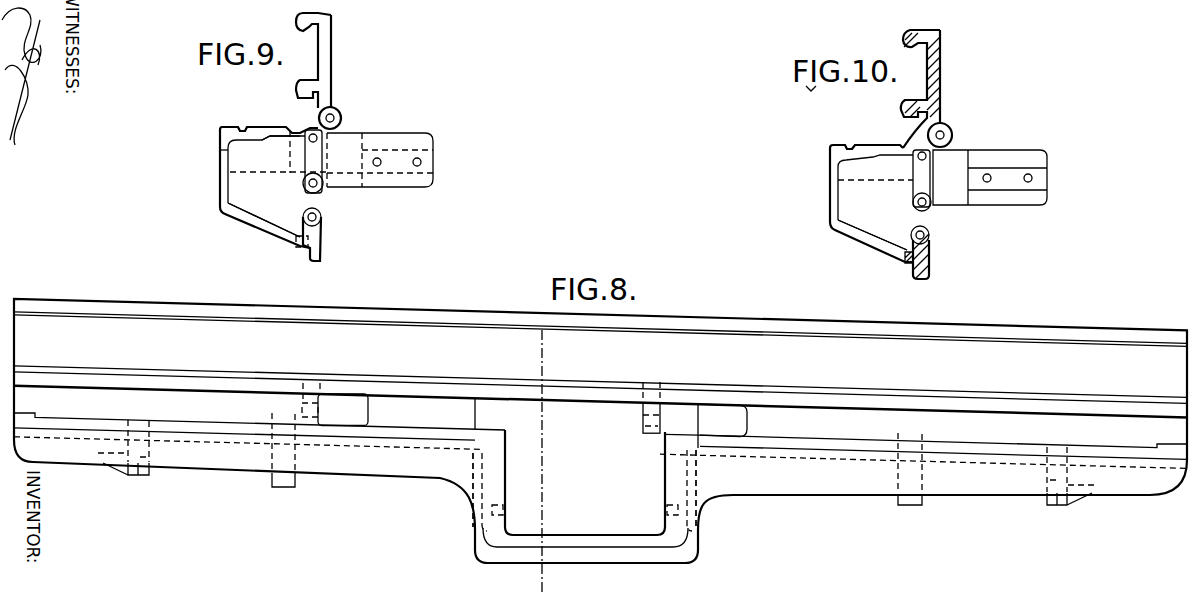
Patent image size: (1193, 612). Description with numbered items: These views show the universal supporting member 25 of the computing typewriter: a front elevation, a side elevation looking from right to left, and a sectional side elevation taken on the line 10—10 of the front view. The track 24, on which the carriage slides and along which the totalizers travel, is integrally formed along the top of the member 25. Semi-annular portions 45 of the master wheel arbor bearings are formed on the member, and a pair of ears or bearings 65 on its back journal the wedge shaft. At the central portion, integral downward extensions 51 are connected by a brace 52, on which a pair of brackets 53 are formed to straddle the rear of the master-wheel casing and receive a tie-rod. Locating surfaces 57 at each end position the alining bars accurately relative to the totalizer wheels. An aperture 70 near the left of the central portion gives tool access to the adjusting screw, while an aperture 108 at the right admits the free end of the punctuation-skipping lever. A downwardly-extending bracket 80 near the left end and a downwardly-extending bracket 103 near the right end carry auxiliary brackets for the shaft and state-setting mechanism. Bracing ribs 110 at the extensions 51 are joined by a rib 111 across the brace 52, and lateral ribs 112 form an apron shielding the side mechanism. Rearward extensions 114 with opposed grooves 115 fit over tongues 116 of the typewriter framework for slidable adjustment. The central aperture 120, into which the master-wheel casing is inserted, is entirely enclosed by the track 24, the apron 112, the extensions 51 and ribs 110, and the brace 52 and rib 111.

In FIG. 8, the section line 10 is at (545, 362).
In FIG. 9, the track 24 is at (332, 58).
In FIG. 10, the track 24 is at (941, 74).
In FIG. 9, the universal supporting member 25 is at (227, 112).
In FIG. 10, the universal supporting member 25 is at (820, 134).
In FIG. 8, the universal supporting member 25 is at (210, 299).
In FIG. 9, the semi-annular portions 45 is at (244, 127).
In FIG. 10, the semi-annular portions 45 is at (849, 144).
In FIG. 9, the downward extensions 51 is at (220, 137).
In FIG. 10, the downward extensions 51 is at (829, 185).
In FIG. 8, the downward extensions 51 is at (584, 490).
In FIG. 9, the brace 52 is at (305, 243).
In FIG. 10, the brace 52 is at (929, 252).
In FIG. 8, the brace 52 is at (567, 535).
In FIG. 9, the brackets 53 is at (321, 221).
In FIG. 10, the brackets 53 is at (930, 232).
In FIG. 8, the brackets 53 is at (499, 510).
In FIG. 9, the locating surfaces 57 is at (278, 137).
In FIG. 8, the locating surfaces 57 is at (25, 413).
In FIG. 9, the ears or bearings 65 is at (339, 110).
In FIG. 10, the ears or bearings 65 is at (951, 128).
In FIG. 8, the ears or bearings 65 is at (315, 412).
In FIG. 8, the aperture 70 is at (350, 399).
In FIG. 10, the downwardly-extending bracket 80 is at (930, 172).
In FIG. 8, the downwardly-extending bracket 80 is at (898, 505).
In FIG. 9, the downwardly-extending bracket 103 is at (322, 163).
In FIG. 8, the downwardly-extending bracket 103 is at (286, 489).
In FIG. 8, the aperture 108 is at (717, 412).
In FIG. 9, the bracing ribs 110 is at (268, 200).
In FIG. 10, the bracing ribs 110 is at (867, 226).
In FIG. 8, the bracing ribs 110 is at (473, 475).
In FIG. 9, the rib 111 is at (318, 258).
In FIG. 10, the rib 111 is at (921, 280).
In FIG. 8, the rib 111 is at (587, 564).
In FIG. 9, the ribs 112 is at (222, 160).
In FIG. 8, the ribs 112 is at (380, 482).
In FIG. 9, the rearward extensions or brackets 114 is at (396, 189).
In FIG. 10, the rearward extensions or brackets 114 is at (996, 206).
In FIG. 8, the rearward extensions or brackets 114 is at (134, 477).
In FIG. 9, the opposed grooves 115 is at (432, 160).
In FIG. 10, the opposed grooves 115 is at (1040, 178).
In FIG. 8, the opposed tongues 116 is at (146, 451).
In FIG. 8, the aperture 120 is at (586, 472).